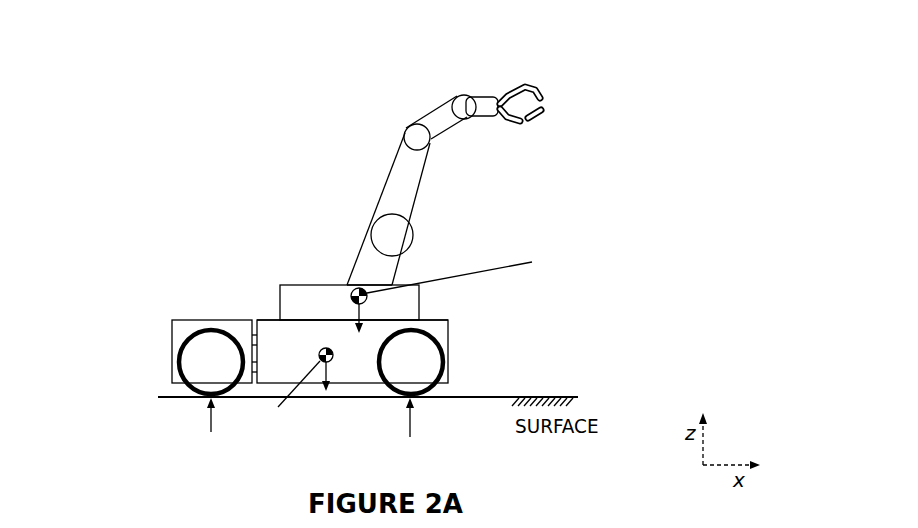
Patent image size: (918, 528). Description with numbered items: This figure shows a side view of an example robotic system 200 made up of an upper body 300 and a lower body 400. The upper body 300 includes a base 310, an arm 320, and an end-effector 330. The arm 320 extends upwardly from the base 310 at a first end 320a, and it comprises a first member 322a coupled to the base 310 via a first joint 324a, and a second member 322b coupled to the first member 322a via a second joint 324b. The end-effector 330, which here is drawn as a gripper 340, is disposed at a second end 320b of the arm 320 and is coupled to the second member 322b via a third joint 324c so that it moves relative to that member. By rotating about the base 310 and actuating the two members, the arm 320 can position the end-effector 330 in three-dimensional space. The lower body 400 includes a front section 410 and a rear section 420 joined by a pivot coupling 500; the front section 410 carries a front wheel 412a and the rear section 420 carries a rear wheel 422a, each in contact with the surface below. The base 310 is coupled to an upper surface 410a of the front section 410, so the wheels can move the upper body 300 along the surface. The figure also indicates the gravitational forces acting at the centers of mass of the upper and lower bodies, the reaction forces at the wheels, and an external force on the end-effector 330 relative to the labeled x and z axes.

The robotic system 200 is at (135, 164).
The upper body 300 is at (403, 185).
The base 310 is at (323, 284).
The arm 320 is at (444, 148).
The first end 320a is at (432, 261).
The second end 320b is at (456, 63).
The first member 322a is at (425, 209).
The second member 322b is at (467, 133).
The first joint 324a is at (349, 235).
The second joint 324b is at (371, 142).
The third joint 324c is at (420, 95).
The end-effector 330 is at (552, 126).
The gripper 340 is at (534, 144).
The lower body 400 is at (290, 368).
The front section 410 is at (396, 377).
The upper surface 410a is at (396, 301).
The front wheel 412a is at (431, 401).
The rear section 420 is at (163, 367).
The rear wheel 422a is at (159, 372).
The pivot coupling 500 is at (224, 319).